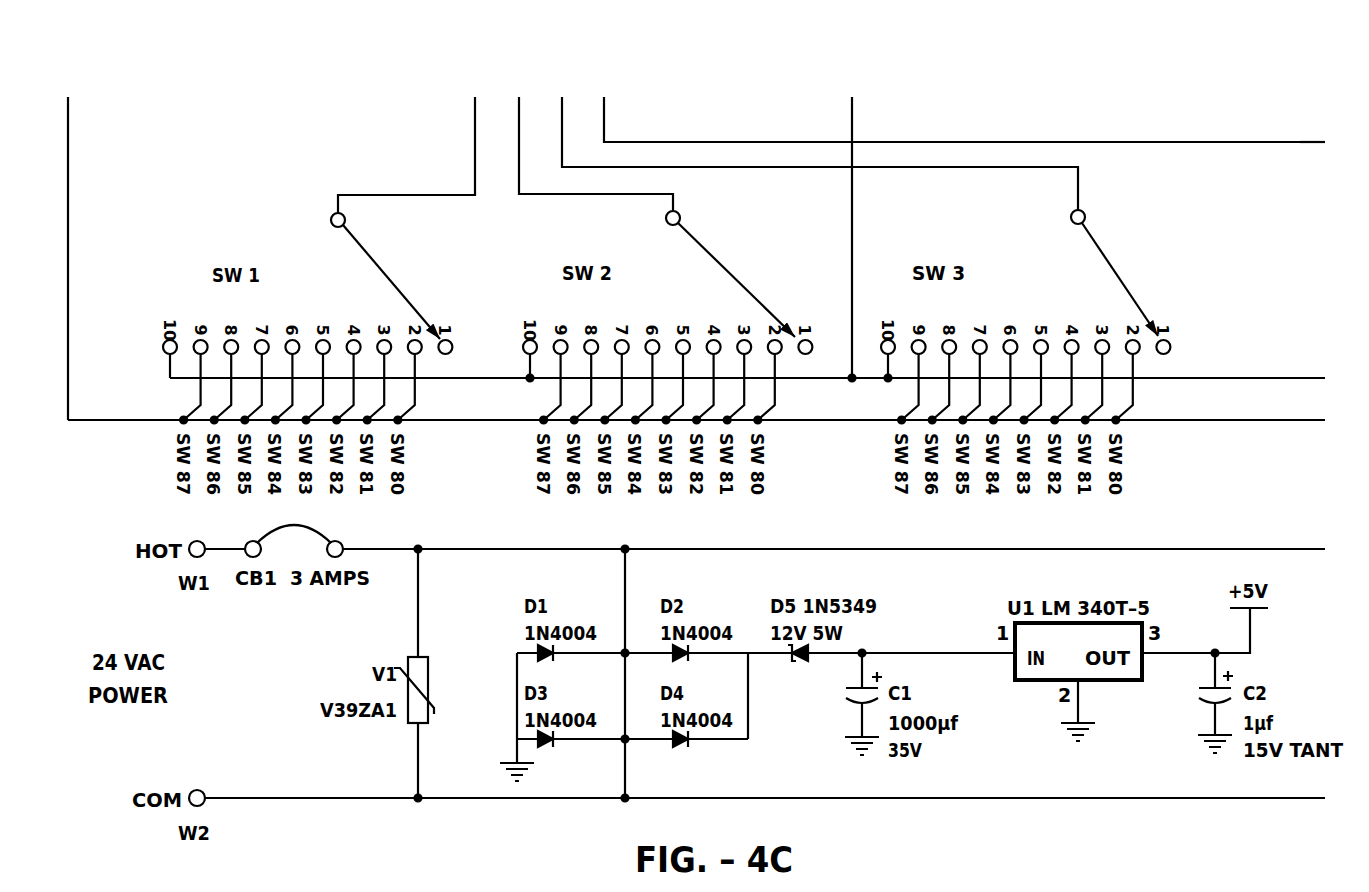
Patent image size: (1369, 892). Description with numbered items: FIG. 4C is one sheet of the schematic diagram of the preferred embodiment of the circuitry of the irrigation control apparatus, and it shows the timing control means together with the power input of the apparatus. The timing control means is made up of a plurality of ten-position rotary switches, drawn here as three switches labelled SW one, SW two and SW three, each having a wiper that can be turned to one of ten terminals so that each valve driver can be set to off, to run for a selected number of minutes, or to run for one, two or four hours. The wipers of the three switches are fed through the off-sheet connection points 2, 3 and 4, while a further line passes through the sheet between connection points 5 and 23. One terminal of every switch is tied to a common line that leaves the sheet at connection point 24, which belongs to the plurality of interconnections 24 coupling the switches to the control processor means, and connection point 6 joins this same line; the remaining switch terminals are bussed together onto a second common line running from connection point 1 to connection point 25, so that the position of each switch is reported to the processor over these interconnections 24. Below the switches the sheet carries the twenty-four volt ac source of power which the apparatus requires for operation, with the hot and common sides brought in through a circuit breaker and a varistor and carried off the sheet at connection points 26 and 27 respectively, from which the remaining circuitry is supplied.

The switch common return line to connector 1 is at (51, 52).
The SW1 wiper input line 2 is at (458, 52).
The SW2 wiper input line 3 is at (502, 52).
The SW3 wiper input line 4 is at (545, 52).
The pass-through line to connector 23 5 is at (587, 52).
The switch pin 10 common line 6 is at (835, 52).
The interconnect to adjacent figure 23 is at (1325, 125).
The interconnections 24 is at (1325, 361).
The switch common bus 25 is at (1325, 403).
The 24 VAC HOT line 26 is at (1325, 532).
The 24 VAC COM line 27 is at (1325, 781).